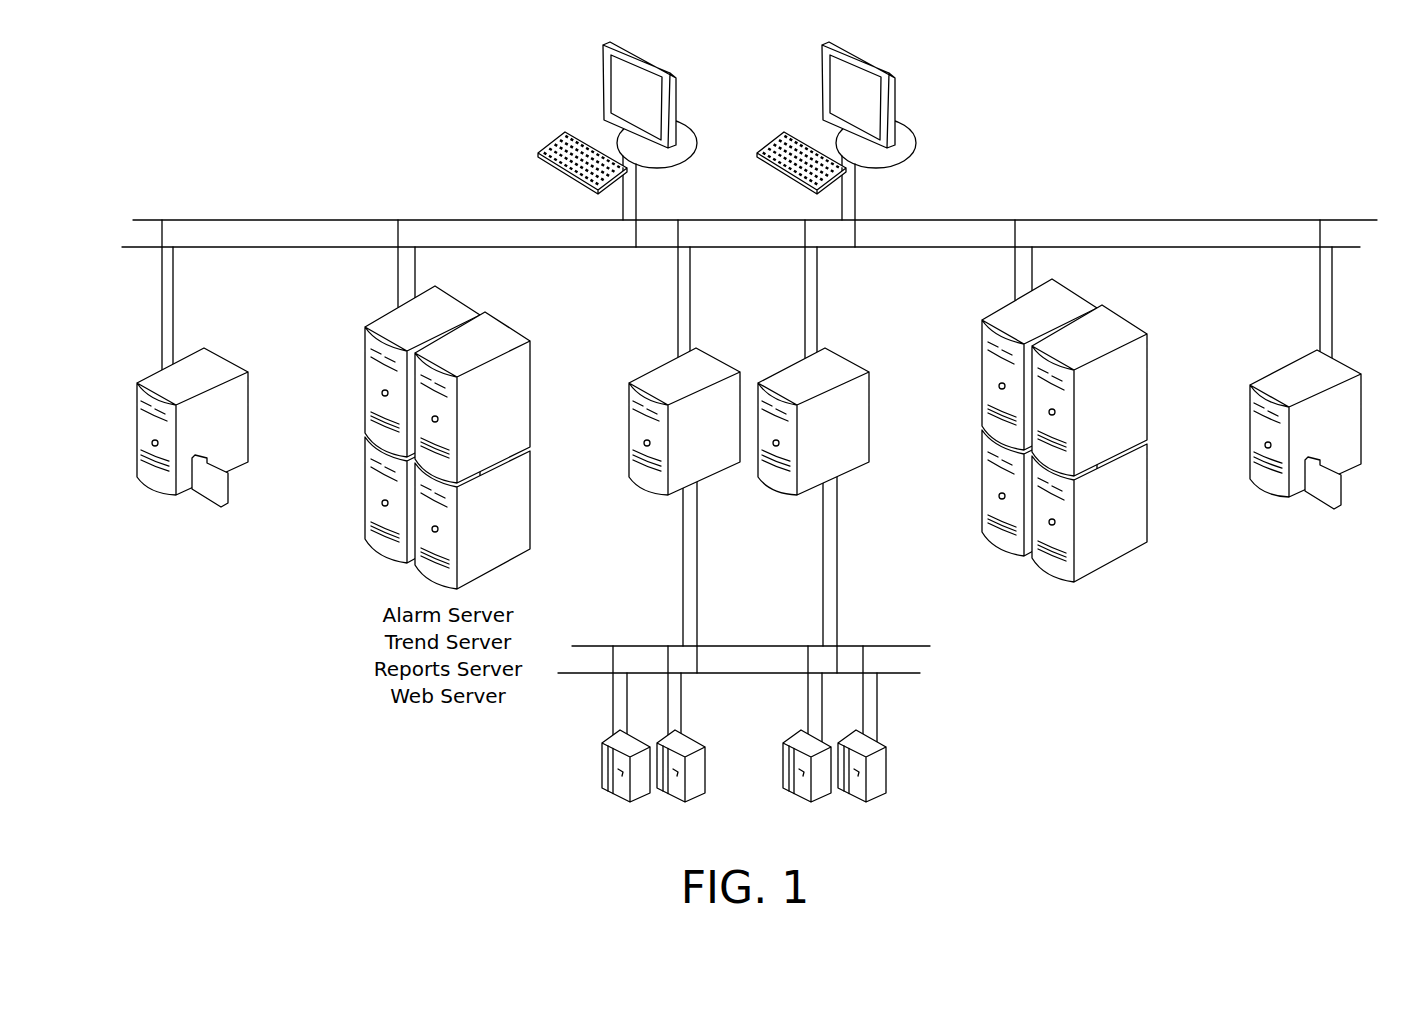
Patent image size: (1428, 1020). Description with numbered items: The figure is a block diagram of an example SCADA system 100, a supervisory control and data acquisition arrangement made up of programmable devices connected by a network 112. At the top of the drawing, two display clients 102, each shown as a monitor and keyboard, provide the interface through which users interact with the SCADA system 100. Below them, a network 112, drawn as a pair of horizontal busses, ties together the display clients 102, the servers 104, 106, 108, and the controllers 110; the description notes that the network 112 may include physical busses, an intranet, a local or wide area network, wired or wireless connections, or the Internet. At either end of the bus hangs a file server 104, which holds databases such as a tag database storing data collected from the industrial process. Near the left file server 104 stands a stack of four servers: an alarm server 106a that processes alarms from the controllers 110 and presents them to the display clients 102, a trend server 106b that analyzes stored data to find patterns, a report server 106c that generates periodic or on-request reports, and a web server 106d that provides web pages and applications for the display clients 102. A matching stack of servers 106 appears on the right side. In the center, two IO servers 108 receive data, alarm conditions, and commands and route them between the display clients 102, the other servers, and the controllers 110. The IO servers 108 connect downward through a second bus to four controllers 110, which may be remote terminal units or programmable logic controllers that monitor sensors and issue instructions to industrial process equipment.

The SCADA system 100 is at (1185, 760).
The display client 102 is at (859, 47).
The file server 104 is at (1392, 432).
The server 106 is at (1148, 518).
The alarm server 106a is at (365, 518).
The trend server 106b is at (530, 525).
The report server 106c is at (517, 332).
The web server 106d is at (460, 300).
The IO server 108 is at (876, 500).
The controller 110 is at (917, 790).
The network 112 is at (1108, 219).